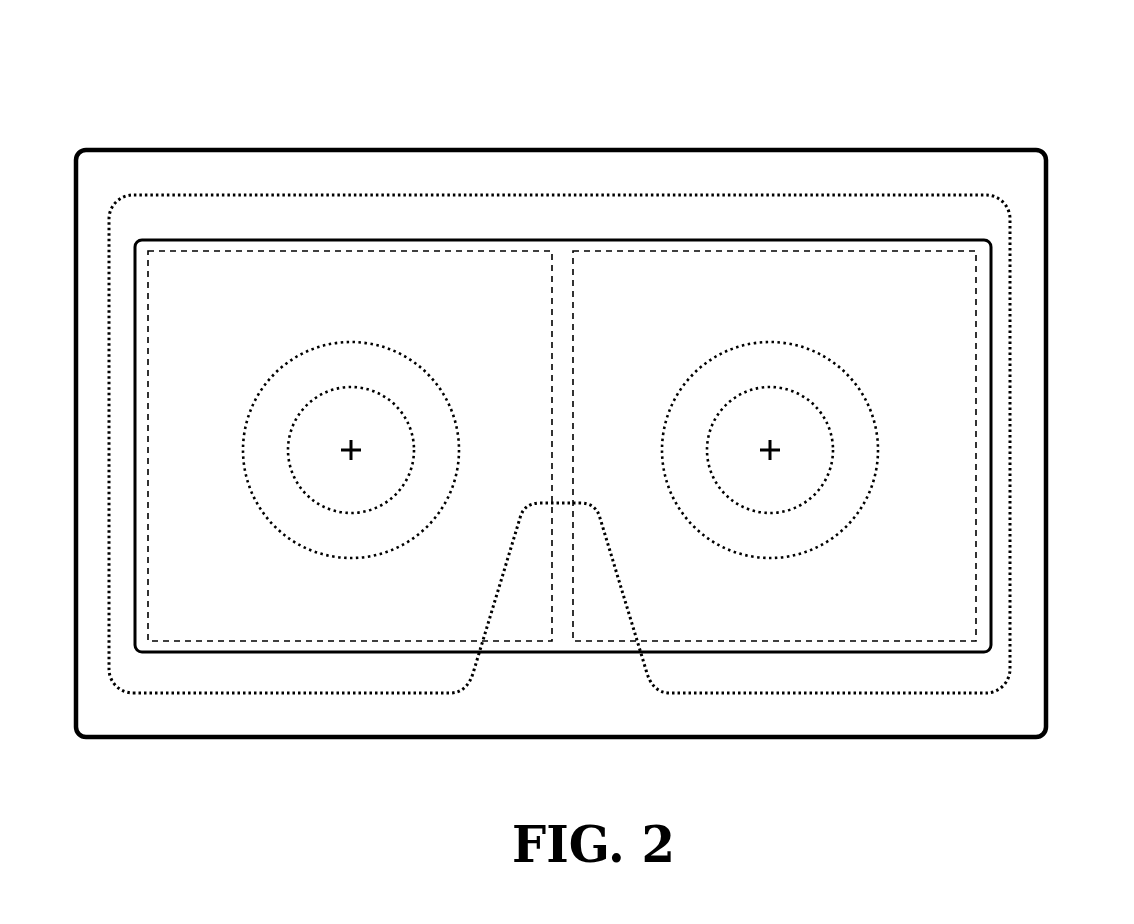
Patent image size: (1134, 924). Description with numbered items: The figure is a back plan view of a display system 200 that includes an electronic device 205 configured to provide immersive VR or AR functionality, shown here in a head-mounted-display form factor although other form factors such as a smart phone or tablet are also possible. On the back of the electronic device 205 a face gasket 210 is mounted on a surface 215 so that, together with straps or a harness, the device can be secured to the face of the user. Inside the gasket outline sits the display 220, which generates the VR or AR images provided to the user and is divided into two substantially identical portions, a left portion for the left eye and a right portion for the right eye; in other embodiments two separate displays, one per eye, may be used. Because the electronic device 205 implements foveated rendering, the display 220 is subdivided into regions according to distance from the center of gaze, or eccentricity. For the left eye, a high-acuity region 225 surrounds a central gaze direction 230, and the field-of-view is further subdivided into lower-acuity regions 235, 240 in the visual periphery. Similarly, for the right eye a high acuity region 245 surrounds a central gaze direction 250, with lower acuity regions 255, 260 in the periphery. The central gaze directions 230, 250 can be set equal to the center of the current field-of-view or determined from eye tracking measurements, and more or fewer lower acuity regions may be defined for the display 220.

The display system 200 is at (1046, 101).
The electronic device 205 is at (770, 146).
The face gasket 210 is at (386, 696).
The surface 215 is at (163, 716).
The display 220 is at (633, 236).
The high-acuity region 225 is at (405, 418).
The central gaze direction 230 is at (353, 447).
The lower-acuity region 235 is at (272, 375).
The lower-acuity region 240 is at (196, 279).
The high acuity region 245 is at (826, 418).
The central gaze direction 250 is at (772, 447).
The lower acuity region 255 is at (690, 374).
The lower acuity region 260 is at (617, 279).